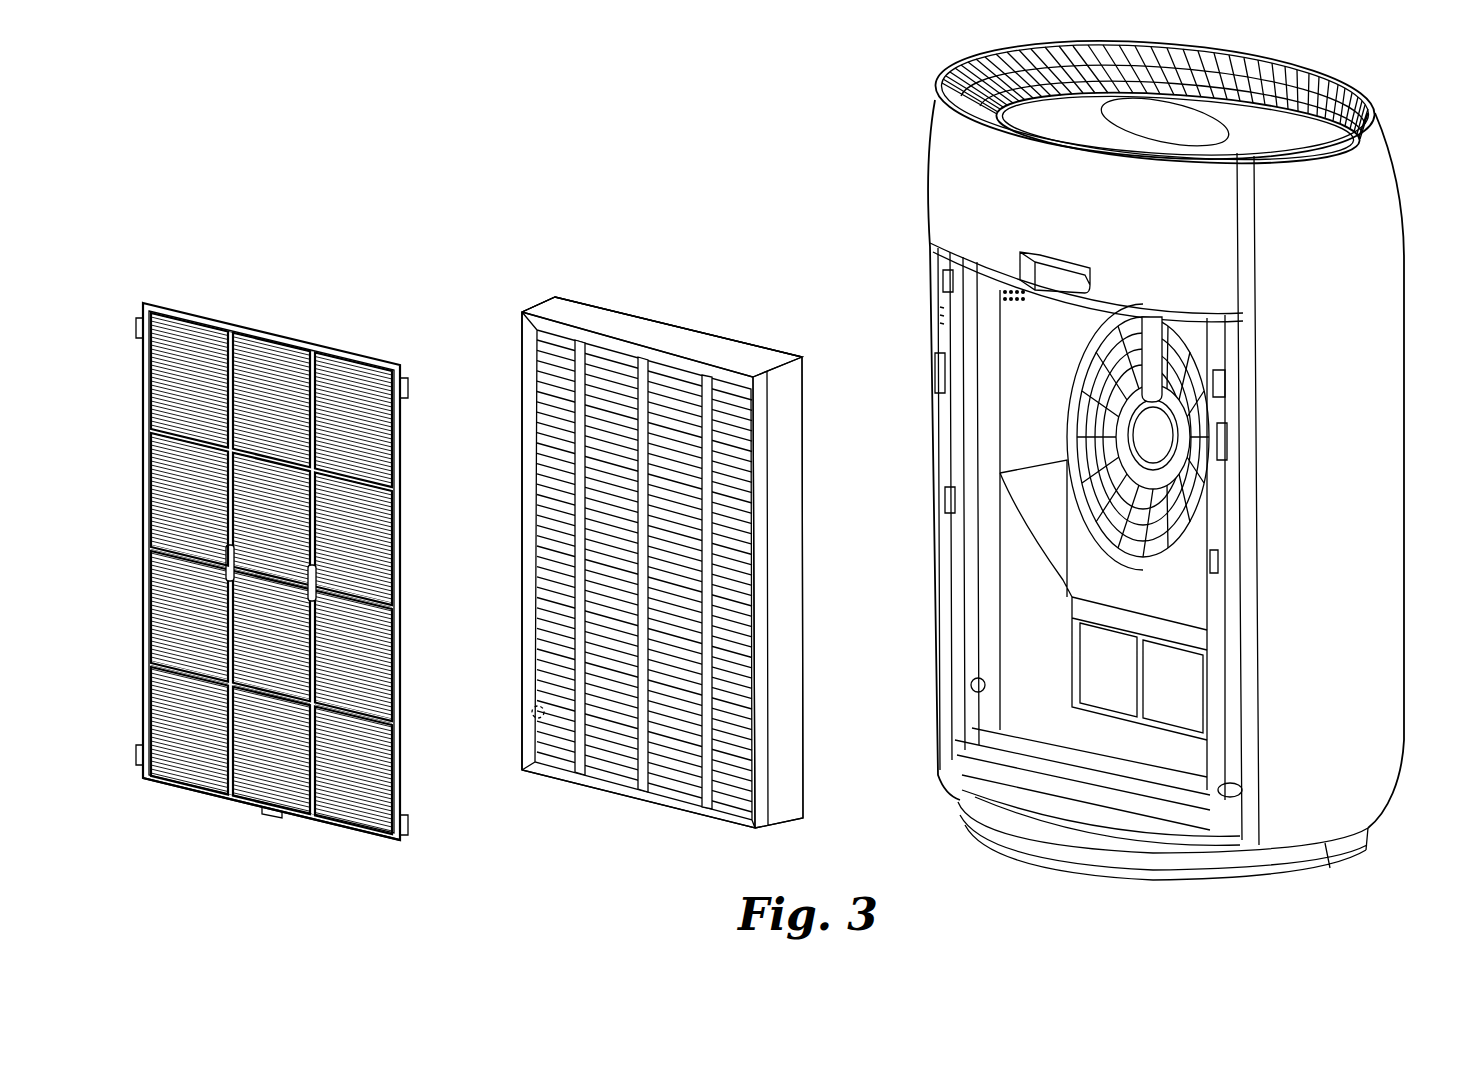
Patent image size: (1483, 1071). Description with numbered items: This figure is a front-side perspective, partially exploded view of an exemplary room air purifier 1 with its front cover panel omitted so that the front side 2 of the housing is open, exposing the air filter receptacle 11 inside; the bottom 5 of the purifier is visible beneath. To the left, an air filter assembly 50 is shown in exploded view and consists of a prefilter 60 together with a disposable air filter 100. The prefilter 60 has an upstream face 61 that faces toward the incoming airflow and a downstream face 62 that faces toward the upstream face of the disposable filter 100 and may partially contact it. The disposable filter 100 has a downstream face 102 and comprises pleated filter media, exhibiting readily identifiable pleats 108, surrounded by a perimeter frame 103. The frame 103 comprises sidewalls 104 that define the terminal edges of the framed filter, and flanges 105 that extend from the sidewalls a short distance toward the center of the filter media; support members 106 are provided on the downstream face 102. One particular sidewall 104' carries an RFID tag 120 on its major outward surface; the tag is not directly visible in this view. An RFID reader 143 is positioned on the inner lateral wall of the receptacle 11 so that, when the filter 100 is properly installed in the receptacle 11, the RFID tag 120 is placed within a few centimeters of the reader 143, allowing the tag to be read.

The room air purifier 1 is at (1408, 72).
The front side 2 is at (915, 742).
The bottom 5 is at (990, 848).
The air filter receptacle 11 is at (1052, 669).
The air filter assembly 50 is at (816, 217).
The prefilter 60 is at (300, 310).
The upstream face 61 is at (160, 453).
The downstream face 62 is at (425, 785).
The disposable air filter 100 is at (614, 290).
The downstream face 102 is at (818, 793).
The perimeter frame 103 is at (677, 330).
The sidewalls 104 is at (700, 580).
The sidewall with RFID tag 104' is at (481, 541).
The flanges 105 is at (545, 327).
The support members 106 is at (706, 795).
The pleats 108 is at (723, 450).
The RFID tag 120 is at (530, 715).
The RFID reader 143 is at (970, 687).